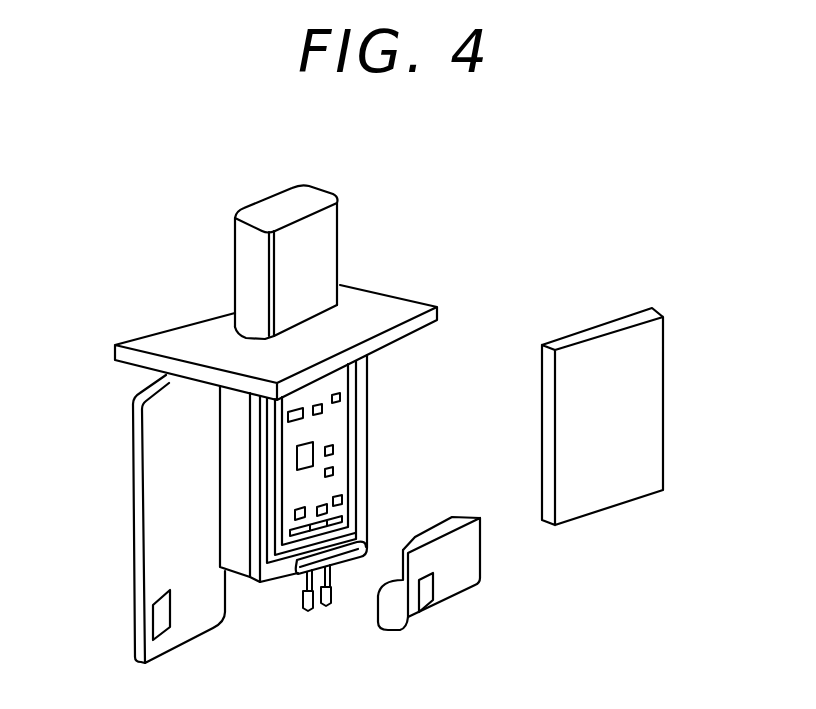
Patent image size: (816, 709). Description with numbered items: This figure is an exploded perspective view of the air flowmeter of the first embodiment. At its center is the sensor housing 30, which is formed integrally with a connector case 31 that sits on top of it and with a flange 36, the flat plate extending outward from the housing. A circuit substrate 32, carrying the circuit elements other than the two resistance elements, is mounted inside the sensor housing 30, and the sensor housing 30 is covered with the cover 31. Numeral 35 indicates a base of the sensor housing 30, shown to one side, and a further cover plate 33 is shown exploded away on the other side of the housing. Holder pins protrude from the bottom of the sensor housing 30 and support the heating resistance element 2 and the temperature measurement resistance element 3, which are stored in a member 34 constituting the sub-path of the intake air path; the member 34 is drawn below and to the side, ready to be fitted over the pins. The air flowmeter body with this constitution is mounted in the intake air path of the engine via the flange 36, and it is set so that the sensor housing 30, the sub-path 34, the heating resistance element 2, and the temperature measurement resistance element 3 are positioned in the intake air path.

The heating resistance element 2 is at (330, 606).
The temperature measurement resistance element 3 is at (308, 611).
The sensor housing 30 is at (375, 459).
The connector case 31 is at (327, 248).
The circuit substrate 32 is at (320, 505).
The rear cover 33 is at (652, 377).
The member constituting the sub-path 34 is at (384, 541).
The base of the sensor housing 35 is at (208, 477).
The flange 36 is at (182, 330).